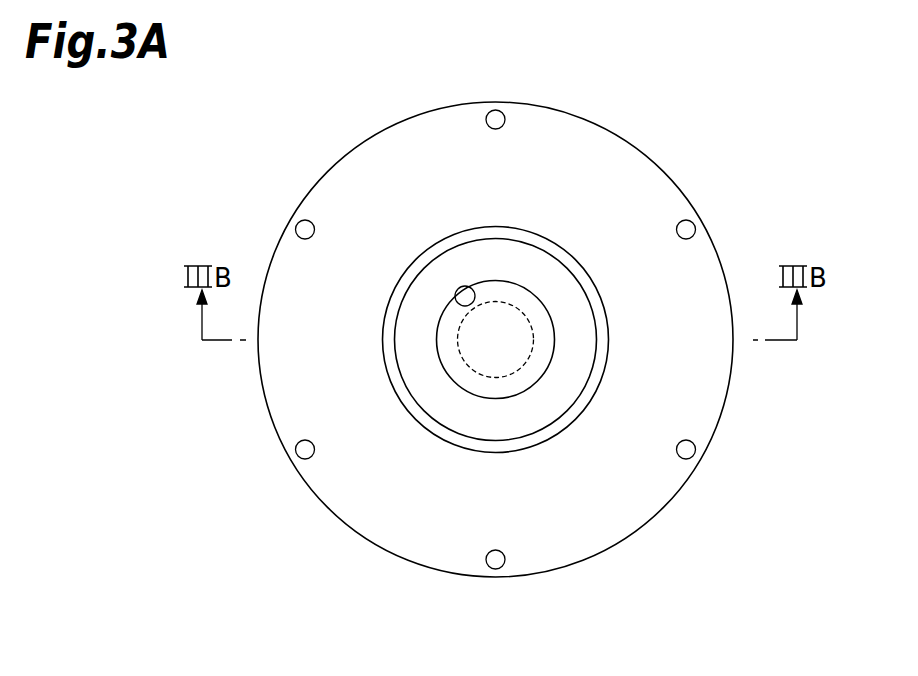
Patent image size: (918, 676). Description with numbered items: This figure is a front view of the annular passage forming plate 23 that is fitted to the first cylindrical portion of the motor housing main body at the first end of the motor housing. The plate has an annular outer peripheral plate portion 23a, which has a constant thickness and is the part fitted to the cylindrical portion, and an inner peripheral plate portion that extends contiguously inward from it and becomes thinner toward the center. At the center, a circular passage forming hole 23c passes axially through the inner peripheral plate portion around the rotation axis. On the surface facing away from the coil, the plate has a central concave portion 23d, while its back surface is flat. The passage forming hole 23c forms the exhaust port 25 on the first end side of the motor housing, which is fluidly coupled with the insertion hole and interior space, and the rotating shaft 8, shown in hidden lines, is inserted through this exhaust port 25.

The passage forming plate 23 is at (647, 152).
The outer peripheral plate portion 23a is at (588, 523).
The passage forming hole 23c is at (455, 295).
The concave portion 23d is at (477, 417).
The exhaust port 25 is at (515, 297).
The rotating shaft 8 is at (458, 366).